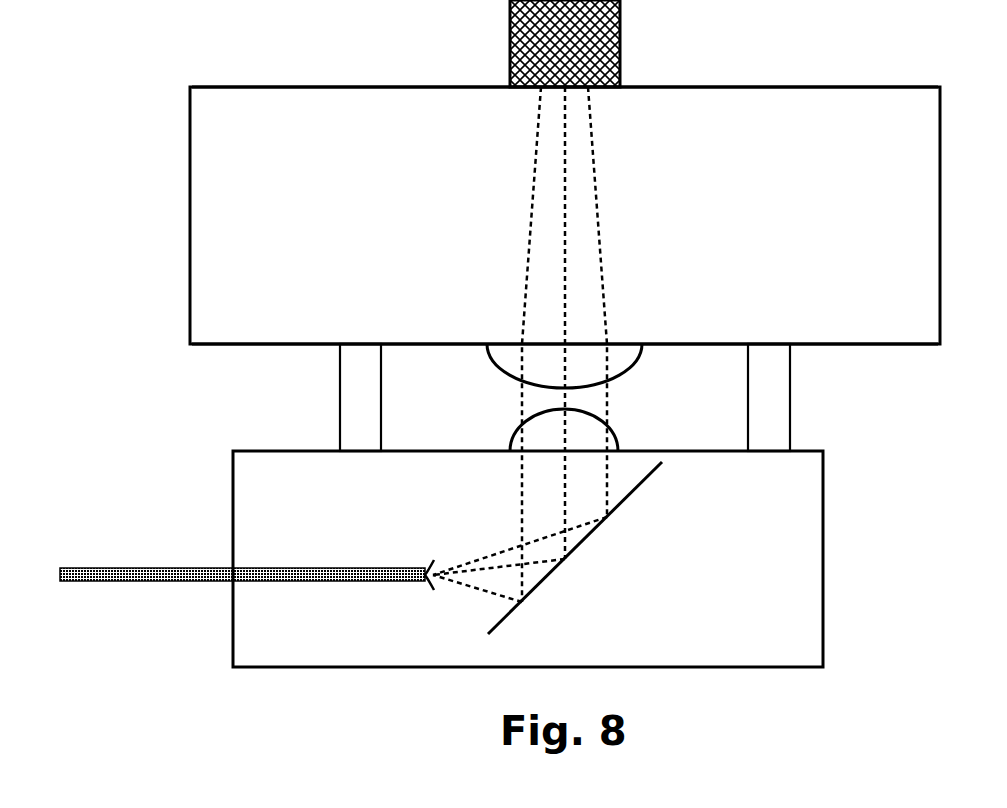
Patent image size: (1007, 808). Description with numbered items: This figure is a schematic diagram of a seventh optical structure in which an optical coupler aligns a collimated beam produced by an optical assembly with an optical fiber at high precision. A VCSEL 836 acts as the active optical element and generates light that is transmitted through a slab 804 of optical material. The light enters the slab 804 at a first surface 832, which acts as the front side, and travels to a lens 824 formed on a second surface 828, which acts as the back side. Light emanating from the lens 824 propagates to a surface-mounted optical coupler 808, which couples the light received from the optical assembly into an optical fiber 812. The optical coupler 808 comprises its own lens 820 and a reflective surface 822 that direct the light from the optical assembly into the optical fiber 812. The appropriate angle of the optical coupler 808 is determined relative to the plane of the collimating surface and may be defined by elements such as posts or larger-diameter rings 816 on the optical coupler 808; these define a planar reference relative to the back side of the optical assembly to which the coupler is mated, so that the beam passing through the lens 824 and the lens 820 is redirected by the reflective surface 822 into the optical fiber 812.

The slab 804 is at (915, 312).
The surface-mounted optical coupler 808 is at (802, 645).
The optical fiber 812 is at (168, 582).
The posts or larger-diameter rings 816 is at (340, 363).
The lens 820 is at (510, 442).
The reflective surface 822 is at (645, 481).
The lens 824 is at (640, 357).
The second surface 828 is at (221, 346).
The first surface 832 is at (771, 87).
The VCSEL 836 is at (622, 44).